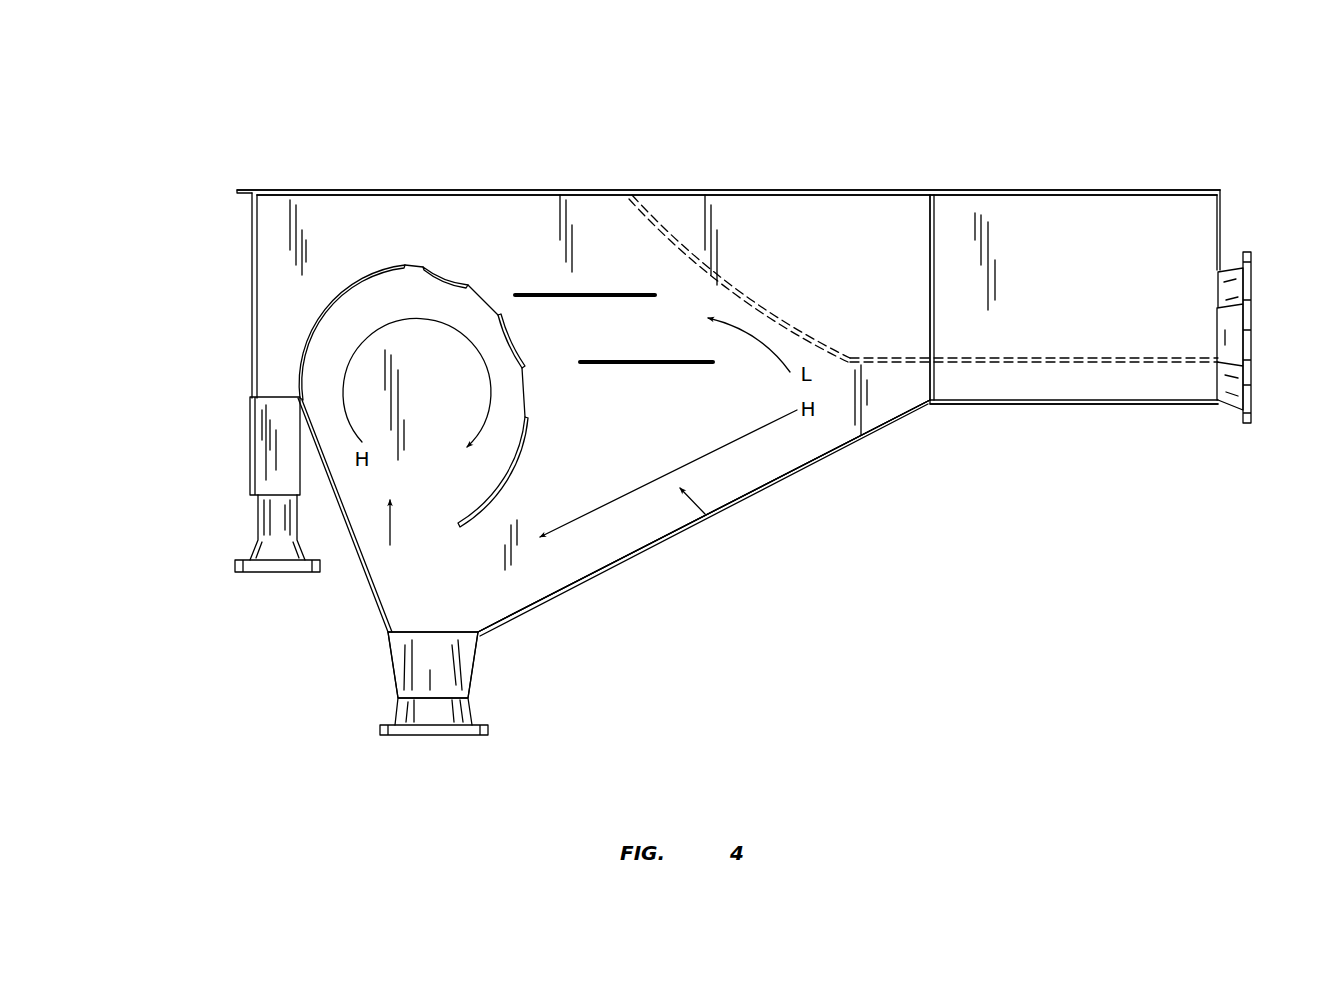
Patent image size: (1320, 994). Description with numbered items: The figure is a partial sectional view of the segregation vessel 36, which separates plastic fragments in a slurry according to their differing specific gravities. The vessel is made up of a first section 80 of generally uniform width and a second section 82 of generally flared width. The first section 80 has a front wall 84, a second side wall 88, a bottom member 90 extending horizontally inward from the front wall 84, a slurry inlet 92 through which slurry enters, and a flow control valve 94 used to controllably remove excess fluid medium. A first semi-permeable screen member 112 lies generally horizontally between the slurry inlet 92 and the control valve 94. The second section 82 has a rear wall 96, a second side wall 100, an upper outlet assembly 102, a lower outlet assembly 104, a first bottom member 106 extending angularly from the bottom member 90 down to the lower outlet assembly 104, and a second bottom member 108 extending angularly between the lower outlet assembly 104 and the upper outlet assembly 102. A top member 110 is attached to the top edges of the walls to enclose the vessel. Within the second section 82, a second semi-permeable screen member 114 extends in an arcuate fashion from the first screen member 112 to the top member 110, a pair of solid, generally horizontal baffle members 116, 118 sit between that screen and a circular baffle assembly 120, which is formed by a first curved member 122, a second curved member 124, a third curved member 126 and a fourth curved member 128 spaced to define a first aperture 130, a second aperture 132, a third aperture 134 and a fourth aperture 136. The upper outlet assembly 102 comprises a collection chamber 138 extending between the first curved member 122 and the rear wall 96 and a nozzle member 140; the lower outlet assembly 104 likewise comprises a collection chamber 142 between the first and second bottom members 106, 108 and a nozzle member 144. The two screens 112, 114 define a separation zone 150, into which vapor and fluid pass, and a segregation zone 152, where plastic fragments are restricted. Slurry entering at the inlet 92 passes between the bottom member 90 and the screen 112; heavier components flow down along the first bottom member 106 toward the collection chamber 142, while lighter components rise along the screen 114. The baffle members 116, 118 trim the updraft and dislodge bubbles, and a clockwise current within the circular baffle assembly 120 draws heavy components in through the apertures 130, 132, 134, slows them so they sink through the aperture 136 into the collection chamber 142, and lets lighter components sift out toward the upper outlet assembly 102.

The segregation vessel 36 is at (700, 128).
The first section 80 is at (1090, 418).
The second section 82 is at (665, 570).
The front wall 84 is at (1220, 212).
The second side wall 88 is at (1052, 215).
The bottom member 90 is at (1008, 404).
The slurry inlet 92 is at (1250, 386).
The flow control valve 94 is at (1253, 280).
The rear wall 96 is at (253, 293).
The second side wall 100 is at (747, 478).
The upper outlet assembly 102 is at (232, 497).
The lower outlet assembly 104 is at (383, 688).
The first bottom member 106 is at (600, 572).
The second bottom member 108 is at (372, 603).
The top member 110 is at (407, 190).
The first semi-permeable screen member 112 is at (1014, 358).
The second semi-permeable screen member 114 is at (740, 292).
The solid baffle member 116 is at (601, 294).
The solid baffle member 118 is at (604, 362).
The circular baffle assembly 120 is at (318, 220).
The first curved member 122 is at (325, 307).
The second curved member 124 is at (436, 262).
The third curved member 126 is at (518, 340).
The fourth curved member 128 is at (527, 437).
The first aperture 130 is at (412, 262).
The second aperture 132 is at (488, 294).
The third aperture 134 is at (522, 395).
The fourth aperture 136 is at (390, 459).
The collection chamber 138 is at (251, 448).
The nozzle member 140 is at (250, 561).
The collection chamber 142 is at (471, 672).
The nozzle member 144 is at (489, 733).
The separation zone 150 is at (812, 226).
The segregation zone 152 is at (705, 515).